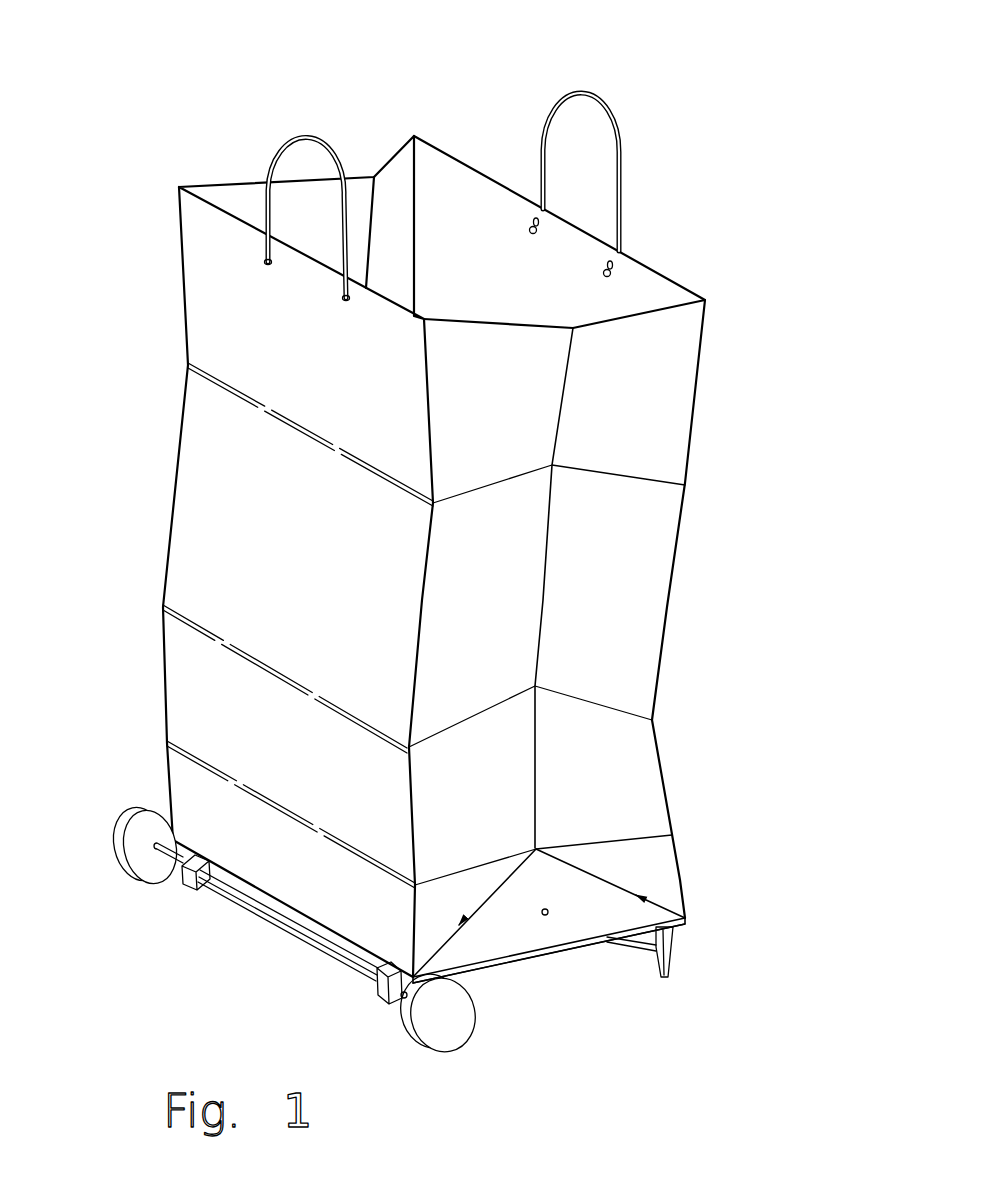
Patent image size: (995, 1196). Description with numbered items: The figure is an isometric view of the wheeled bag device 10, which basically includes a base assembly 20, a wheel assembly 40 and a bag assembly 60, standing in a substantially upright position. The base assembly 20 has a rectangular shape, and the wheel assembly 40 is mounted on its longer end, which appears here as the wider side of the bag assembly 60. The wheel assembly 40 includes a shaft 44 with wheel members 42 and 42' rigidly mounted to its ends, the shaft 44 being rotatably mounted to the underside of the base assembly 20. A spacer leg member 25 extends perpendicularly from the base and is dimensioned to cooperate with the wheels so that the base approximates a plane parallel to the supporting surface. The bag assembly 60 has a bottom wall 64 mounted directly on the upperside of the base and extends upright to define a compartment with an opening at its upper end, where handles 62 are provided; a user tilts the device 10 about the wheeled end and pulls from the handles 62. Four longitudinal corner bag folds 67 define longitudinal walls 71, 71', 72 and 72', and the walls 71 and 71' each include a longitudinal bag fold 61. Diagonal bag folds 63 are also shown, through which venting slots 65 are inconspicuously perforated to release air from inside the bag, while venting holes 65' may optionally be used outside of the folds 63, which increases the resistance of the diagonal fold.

The wheeled bag device 10 is at (108, 150).
The base assembly 20 is at (581, 949).
The spacer leg member 25 is at (676, 953).
The wheel assembly 40 is at (462, 1052).
The wheel member 42 is at (432, 1060).
The wheel member 42' is at (145, 887).
The shaft 44 is at (298, 940).
The bag assembly 60 is at (700, 392).
The longitudinal bag fold 61 is at (547, 540).
The handle 62 is at (617, 137).
The diagonal bag fold 63 is at (512, 876).
The bottom wall 64 is at (493, 963).
The venting slot 65 is at (647, 877).
The venting hole 65' is at (571, 972).
The longitudinal corner bag fold 67 is at (703, 332).
The longitudinal wall 71 is at (390, 226).
The longitudinal wall 71' is at (498, 411).
The longitudinal wall 72 is at (298, 625).
The longitudinal wall 72' is at (559, 232).